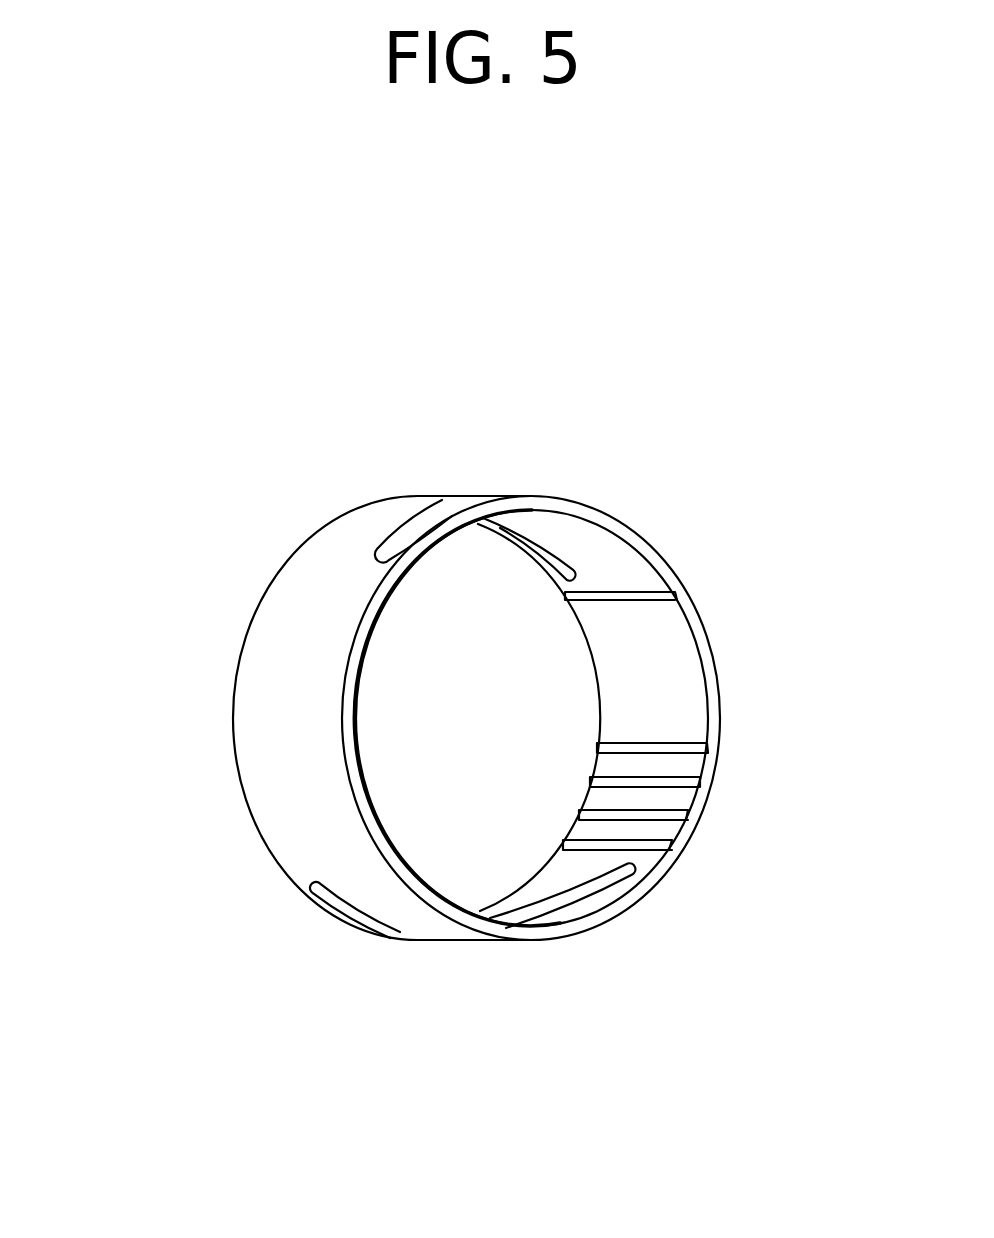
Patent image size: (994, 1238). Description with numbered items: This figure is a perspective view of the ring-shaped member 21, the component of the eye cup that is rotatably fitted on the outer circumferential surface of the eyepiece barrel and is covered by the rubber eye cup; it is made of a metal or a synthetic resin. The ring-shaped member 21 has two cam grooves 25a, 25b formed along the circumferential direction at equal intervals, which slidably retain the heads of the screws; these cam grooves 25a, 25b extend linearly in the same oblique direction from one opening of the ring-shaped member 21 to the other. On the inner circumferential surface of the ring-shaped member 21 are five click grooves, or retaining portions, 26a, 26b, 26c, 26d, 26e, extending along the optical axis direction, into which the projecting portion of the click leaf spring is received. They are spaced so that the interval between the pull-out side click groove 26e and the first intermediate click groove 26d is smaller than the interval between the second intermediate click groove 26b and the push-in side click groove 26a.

The ring-shaped member 21 is at (220, 612).
The cam groove 25a is at (401, 532).
The cam groove 25b is at (355, 917).
The click groove 26a is at (672, 594).
The click groove 26b is at (706, 746).
The click groove 26c is at (700, 782).
The click groove 26d is at (688, 816).
The click groove 26e is at (672, 848).